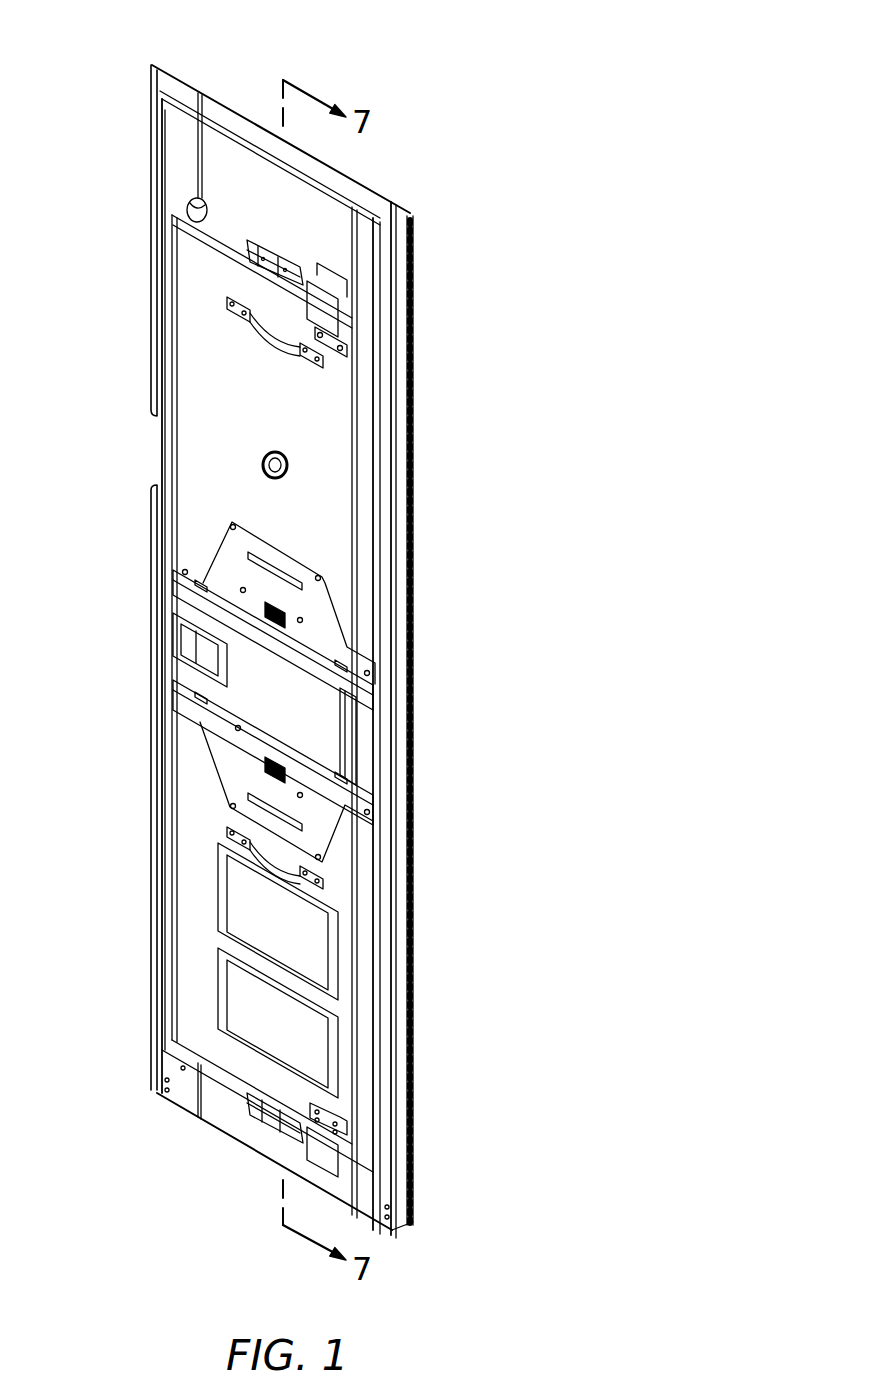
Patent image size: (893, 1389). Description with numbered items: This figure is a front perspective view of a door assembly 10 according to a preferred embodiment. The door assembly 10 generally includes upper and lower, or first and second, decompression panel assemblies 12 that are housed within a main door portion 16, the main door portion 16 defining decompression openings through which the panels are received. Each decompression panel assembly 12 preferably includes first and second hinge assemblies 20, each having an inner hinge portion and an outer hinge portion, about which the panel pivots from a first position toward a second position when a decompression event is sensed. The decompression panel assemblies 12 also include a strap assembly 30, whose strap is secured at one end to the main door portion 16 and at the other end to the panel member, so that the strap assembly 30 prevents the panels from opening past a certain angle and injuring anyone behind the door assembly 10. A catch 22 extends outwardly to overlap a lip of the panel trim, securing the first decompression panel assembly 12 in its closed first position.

The door assembly 10 is at (491, 107).
The decompression panel assembly 12 is at (205, 442).
The main door portion 16 is at (353, 720).
The hinge assembly 20 is at (352, 636).
The catch 22 is at (292, 262).
The strap assembly 30 is at (372, 302).